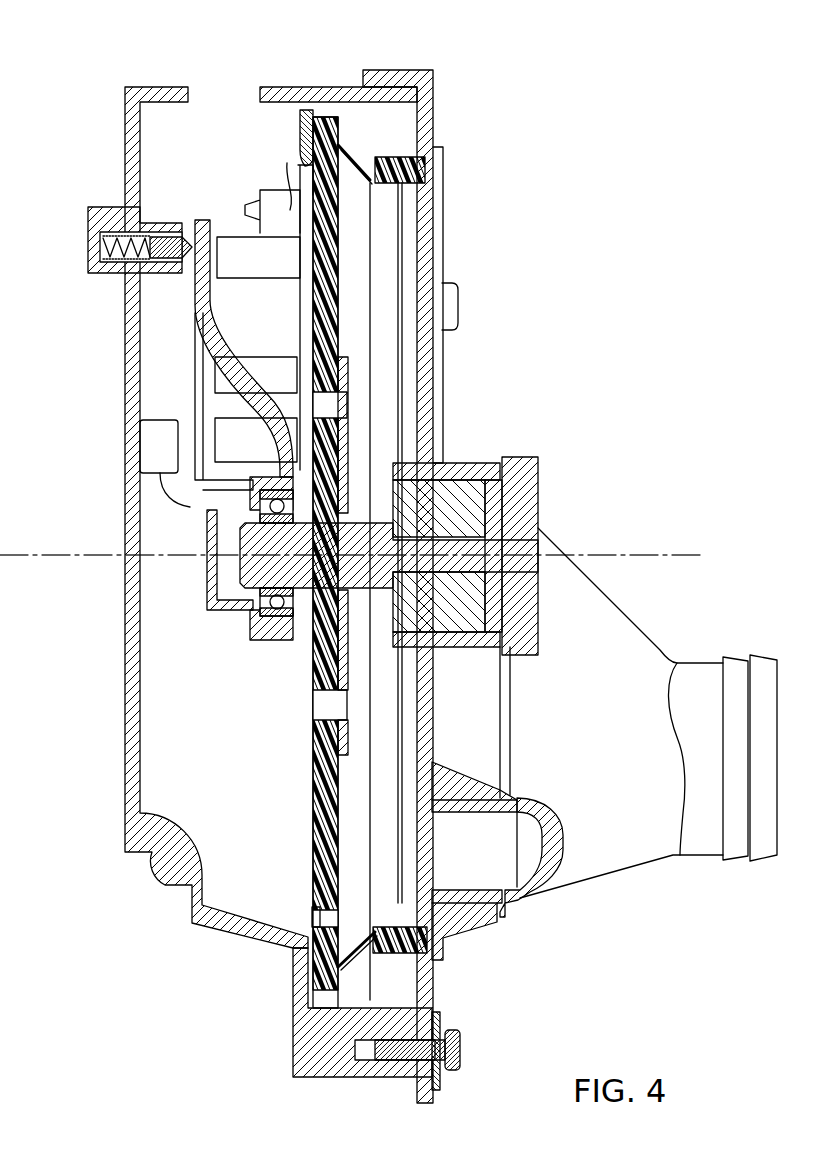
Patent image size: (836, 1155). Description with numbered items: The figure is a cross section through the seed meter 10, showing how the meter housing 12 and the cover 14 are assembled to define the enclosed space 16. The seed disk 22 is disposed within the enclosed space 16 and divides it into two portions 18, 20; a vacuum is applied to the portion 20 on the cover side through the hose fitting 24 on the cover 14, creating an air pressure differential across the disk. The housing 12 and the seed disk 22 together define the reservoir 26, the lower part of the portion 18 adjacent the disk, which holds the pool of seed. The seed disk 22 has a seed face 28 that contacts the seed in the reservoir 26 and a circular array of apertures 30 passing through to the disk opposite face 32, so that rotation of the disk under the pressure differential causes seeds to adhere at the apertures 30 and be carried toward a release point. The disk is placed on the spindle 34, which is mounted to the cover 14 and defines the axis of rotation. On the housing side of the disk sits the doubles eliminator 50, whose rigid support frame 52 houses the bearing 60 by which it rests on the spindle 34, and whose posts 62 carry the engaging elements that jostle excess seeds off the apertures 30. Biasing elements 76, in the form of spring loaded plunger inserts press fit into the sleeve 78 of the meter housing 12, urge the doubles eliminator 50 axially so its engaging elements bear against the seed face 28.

The seed meter 10 is at (543, 101).
The meter housing 12 is at (128, 140).
The cover 14 is at (433, 367).
The enclosed space 16 is at (239, 113).
The enclosed space portion 18 is at (212, 692).
The enclosed space portion 20 is at (353, 787).
The seed disk 22 is at (330, 993).
The hose fitting 24 is at (707, 660).
The reservoir 26 is at (224, 889).
The seed face 28 is at (313, 800).
The apertures 30 is at (303, 933).
The disk opposite face 32 is at (337, 857).
The spindle 34 is at (358, 510).
The doubles eliminator 50 is at (168, 586).
The support frame 52 is at (247, 365).
The bearing 60 is at (268, 628).
The posts 62 is at (230, 233).
The biasing elements 76 is at (106, 240).
The sleeve 78 is at (160, 277).